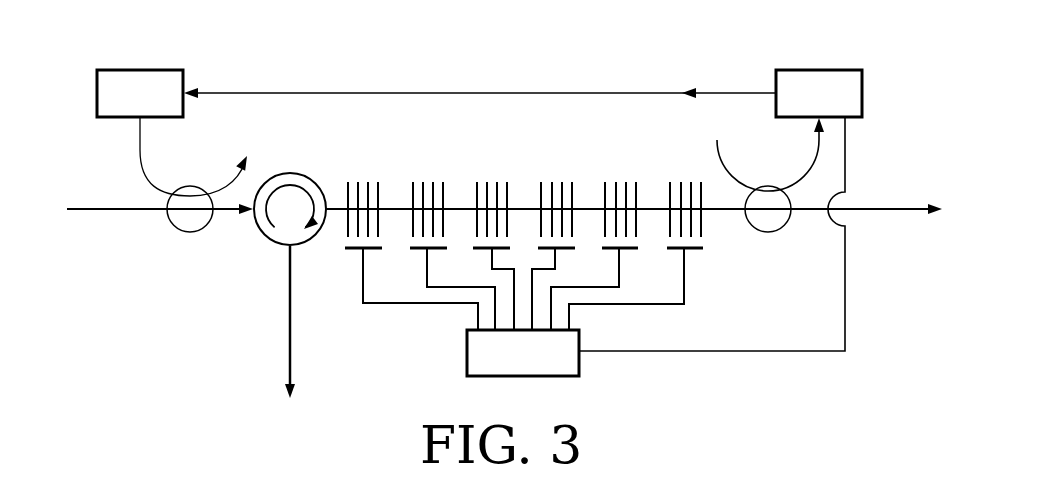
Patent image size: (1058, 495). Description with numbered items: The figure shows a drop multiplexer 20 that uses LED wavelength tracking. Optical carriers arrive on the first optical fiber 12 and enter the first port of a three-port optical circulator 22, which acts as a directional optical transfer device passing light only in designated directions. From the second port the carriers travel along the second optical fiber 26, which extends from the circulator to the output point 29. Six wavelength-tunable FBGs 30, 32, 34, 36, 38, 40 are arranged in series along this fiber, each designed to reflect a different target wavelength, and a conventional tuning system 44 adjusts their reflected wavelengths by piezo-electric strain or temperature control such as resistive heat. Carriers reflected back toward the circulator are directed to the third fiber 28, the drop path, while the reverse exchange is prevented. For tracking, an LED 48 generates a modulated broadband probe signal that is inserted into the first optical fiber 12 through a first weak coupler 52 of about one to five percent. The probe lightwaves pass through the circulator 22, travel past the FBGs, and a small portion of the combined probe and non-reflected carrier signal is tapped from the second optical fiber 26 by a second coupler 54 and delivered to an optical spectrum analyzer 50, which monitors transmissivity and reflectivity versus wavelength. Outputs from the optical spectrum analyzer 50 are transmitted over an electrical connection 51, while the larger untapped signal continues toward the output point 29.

The first optical fiber 12 is at (103, 211).
The drop multiplexer 20 is at (806, 414).
The three-port optical circulator 22 is at (310, 172).
The second optical fiber 26 is at (391, 211).
The third fiber 28 is at (289, 329).
The output point 29 is at (943, 212).
The FBG 30 is at (362, 181).
The FBG 32 is at (425, 181).
The FBG 34 is at (489, 181).
The FBG 36 is at (554, 181).
The FBG 38 is at (617, 181).
The FBG 40 is at (682, 181).
The tuning system 44 is at (540, 367).
The LED 48 is at (144, 70).
The optical spectrum analyzer 50 is at (823, 70).
The electrical connection 51 is at (846, 138).
The first weak coupler 52 is at (185, 232).
The second coupler 54 is at (762, 232).